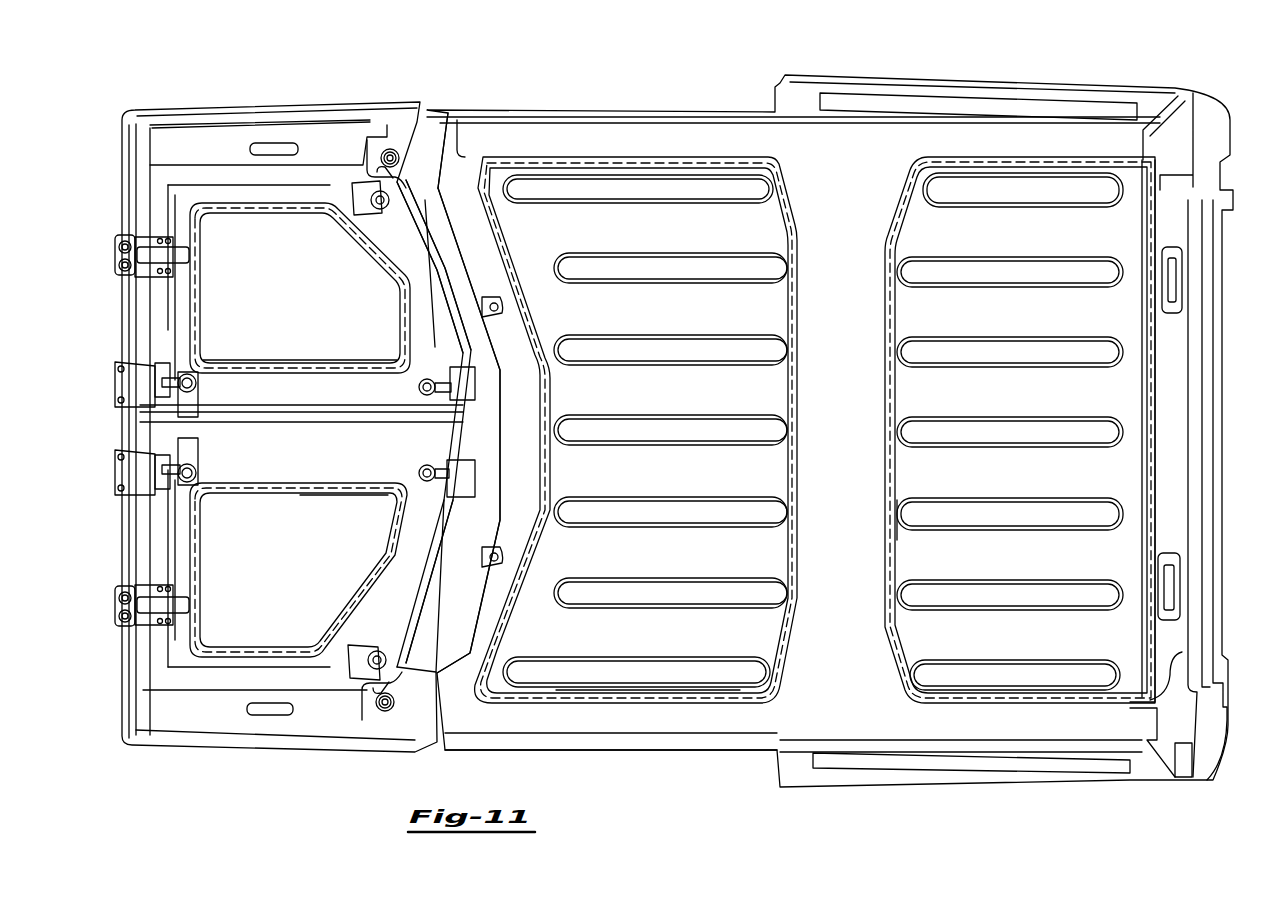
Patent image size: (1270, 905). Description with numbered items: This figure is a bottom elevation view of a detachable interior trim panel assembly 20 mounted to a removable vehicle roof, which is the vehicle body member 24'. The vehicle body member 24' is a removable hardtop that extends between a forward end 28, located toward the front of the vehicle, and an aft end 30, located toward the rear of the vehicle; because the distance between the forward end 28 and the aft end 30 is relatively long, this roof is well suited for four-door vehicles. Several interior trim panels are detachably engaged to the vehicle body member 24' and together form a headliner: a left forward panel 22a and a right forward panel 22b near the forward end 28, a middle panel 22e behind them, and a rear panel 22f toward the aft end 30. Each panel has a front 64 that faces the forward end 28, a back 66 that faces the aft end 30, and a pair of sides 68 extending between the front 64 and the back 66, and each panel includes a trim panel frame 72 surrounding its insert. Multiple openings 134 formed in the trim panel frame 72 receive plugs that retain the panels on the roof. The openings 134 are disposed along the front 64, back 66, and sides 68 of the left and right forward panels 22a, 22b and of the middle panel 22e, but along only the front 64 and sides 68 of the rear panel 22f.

The detachable interior trim panel assembly 20 is at (147, 92).
The forward end 28 is at (120, 150).
The vehicle body member 24' is at (830, 421).
The aft end 30 is at (1222, 322).
The left forward panel 22a is at (250, 253).
The right forward panel 22b is at (250, 618).
The middle panel 22e is at (690, 324).
The rear panel 22f is at (1032, 324).
The front 64 is at (172, 322).
The back 66 is at (392, 286).
The sides 68 is at (240, 200).
The trim panel frame 72 is at (185, 232).
The openings 134 is at (362, 360).